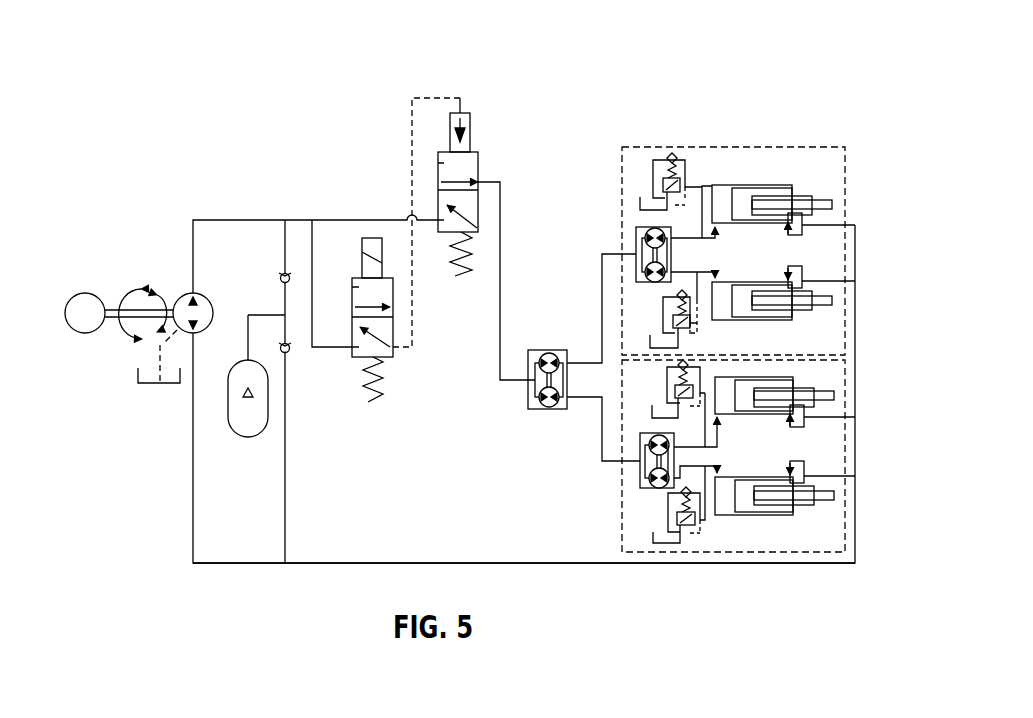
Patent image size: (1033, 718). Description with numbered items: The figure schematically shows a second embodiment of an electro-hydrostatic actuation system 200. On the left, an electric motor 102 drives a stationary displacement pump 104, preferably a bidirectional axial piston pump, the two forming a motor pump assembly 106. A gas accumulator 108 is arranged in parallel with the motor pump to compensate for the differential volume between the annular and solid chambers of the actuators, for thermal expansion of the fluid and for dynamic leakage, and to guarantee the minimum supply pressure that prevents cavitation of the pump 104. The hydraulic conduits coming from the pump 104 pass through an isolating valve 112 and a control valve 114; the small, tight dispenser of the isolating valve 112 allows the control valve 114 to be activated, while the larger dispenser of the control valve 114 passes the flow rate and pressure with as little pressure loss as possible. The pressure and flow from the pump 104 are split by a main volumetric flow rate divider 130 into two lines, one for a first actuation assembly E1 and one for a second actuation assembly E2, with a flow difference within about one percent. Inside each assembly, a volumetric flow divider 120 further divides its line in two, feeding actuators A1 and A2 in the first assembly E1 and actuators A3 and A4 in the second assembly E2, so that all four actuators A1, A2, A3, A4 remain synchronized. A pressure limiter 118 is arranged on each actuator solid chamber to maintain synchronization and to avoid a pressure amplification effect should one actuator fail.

The electric motor 102 is at (83, 334).
The stationary displacement pump 104 is at (187, 294).
The motor pump assembly 106 is at (125, 256).
The gas accumulator 108 is at (247, 440).
The isolating valve 112 is at (368, 406).
The control valve 114 is at (493, 150).
The pressure limiter 118 is at (695, 540).
The volumetric flow divider 120 is at (636, 226).
The main volumetric flow rate divider 130 is at (537, 437).
The hydraulic system 200 is at (148, 528).
The first actuation assembly E1 is at (795, 145).
The second actuation assembly E2 is at (792, 553).
The actuator A1 is at (828, 192).
The actuator A2 is at (830, 315).
The actuator A3 is at (830, 405).
The actuator A4 is at (833, 515).